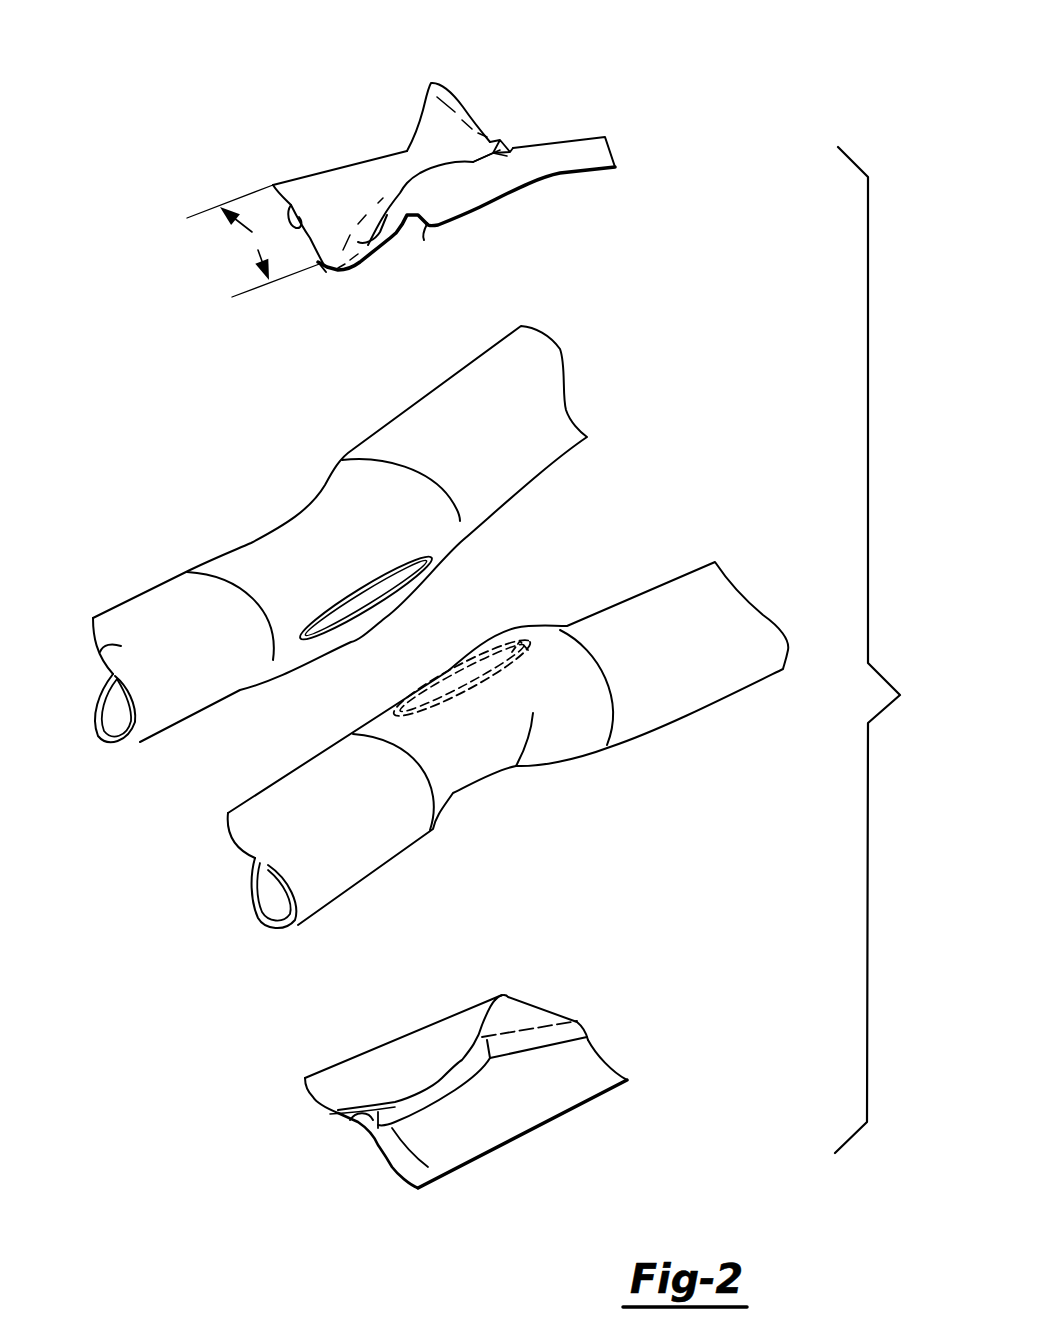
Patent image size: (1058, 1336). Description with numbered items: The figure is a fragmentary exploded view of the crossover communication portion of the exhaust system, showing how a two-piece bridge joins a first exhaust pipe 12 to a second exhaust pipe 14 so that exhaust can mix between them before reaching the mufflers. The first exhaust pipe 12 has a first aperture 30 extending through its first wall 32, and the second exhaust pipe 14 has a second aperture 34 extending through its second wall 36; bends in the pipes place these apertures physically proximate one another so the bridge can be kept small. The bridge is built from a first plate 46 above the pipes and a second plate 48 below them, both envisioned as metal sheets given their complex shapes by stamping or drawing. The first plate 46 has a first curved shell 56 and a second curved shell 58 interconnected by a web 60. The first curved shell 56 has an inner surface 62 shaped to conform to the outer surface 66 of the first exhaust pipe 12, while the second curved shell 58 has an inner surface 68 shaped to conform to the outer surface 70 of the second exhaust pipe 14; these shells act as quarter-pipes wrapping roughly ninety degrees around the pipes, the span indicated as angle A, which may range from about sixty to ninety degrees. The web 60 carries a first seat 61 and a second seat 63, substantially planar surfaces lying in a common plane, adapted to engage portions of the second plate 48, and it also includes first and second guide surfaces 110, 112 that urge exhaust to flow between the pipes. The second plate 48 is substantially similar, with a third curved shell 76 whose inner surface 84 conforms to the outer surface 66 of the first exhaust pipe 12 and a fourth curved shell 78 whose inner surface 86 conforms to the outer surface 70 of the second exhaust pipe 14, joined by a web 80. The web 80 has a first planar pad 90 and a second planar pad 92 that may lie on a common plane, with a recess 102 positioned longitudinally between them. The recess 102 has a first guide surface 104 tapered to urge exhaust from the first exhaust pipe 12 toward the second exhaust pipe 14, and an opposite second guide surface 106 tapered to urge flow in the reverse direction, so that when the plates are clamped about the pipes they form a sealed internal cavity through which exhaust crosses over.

The first exhaust pipe 12 is at (704, 688).
The second exhaust pipe 14 is at (160, 590).
The first aperture 30 is at (514, 653).
The first wall 32 is at (451, 667).
The second aperture 34 is at (357, 588).
The second wall 36 is at (349, 626).
The first plate 46 is at (383, 75).
The second plate 48 is at (548, 1154).
The first curved shell 56 is at (545, 165).
The second curved shell 58 is at (432, 130).
The web 60 is at (499, 145).
The first seat 61 is at (507, 155).
The inner surface 62 is at (424, 229).
The second seat 63 is at (324, 268).
The outer surface 66 is at (697, 590).
The inner surface 68 is at (294, 216).
The outer surface 70 is at (100, 652).
The third curved shell 76 is at (562, 1087).
The fourth curved shell 78 is at (398, 1057).
The web 80 is at (512, 1016).
The inner surface 84 is at (574, 1058).
The inner surface 86 is at (342, 1094).
The first planar pad 90 is at (540, 1020).
The second planar pad 92 is at (348, 1122).
The recess 102 is at (412, 1108).
The first guide surface 104 is at (467, 1073).
The second guide surface 106 is at (467, 1050).
The first guide surface 110 is at (381, 229).
The second guide surface 112 is at (399, 190).